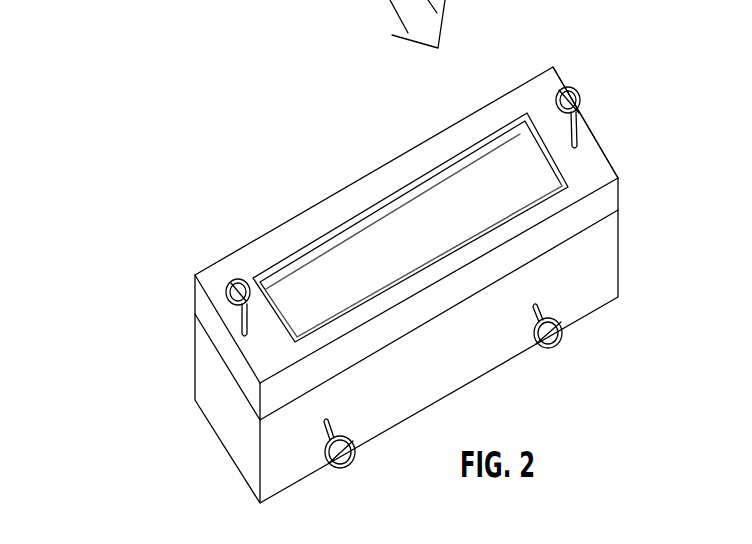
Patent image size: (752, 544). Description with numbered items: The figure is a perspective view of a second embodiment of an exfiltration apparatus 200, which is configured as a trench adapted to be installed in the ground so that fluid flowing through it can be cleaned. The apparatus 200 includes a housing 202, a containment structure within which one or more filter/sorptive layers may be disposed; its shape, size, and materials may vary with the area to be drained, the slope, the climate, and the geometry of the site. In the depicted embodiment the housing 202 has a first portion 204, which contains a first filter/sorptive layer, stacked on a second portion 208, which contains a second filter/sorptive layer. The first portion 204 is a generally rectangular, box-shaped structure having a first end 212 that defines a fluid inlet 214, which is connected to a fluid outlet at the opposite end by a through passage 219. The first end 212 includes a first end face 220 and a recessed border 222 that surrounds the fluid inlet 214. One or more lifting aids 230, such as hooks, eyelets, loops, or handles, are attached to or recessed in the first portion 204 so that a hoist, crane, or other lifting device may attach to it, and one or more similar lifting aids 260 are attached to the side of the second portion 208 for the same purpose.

The exfiltration apparatus 200 is at (112, 173).
The housing 202 is at (644, 215).
The first portion 204 is at (203, 312).
The second portion 208 is at (215, 400).
The first end 212 is at (301, 148).
The fluid inlet 214 is at (424, 214).
The through passage 219 is at (372, 270).
The first end face 220 is at (522, 100).
The recessed border 222 is at (268, 276).
The lifting aids 230 is at (229, 280).
The lifting aids 260 is at (560, 347).